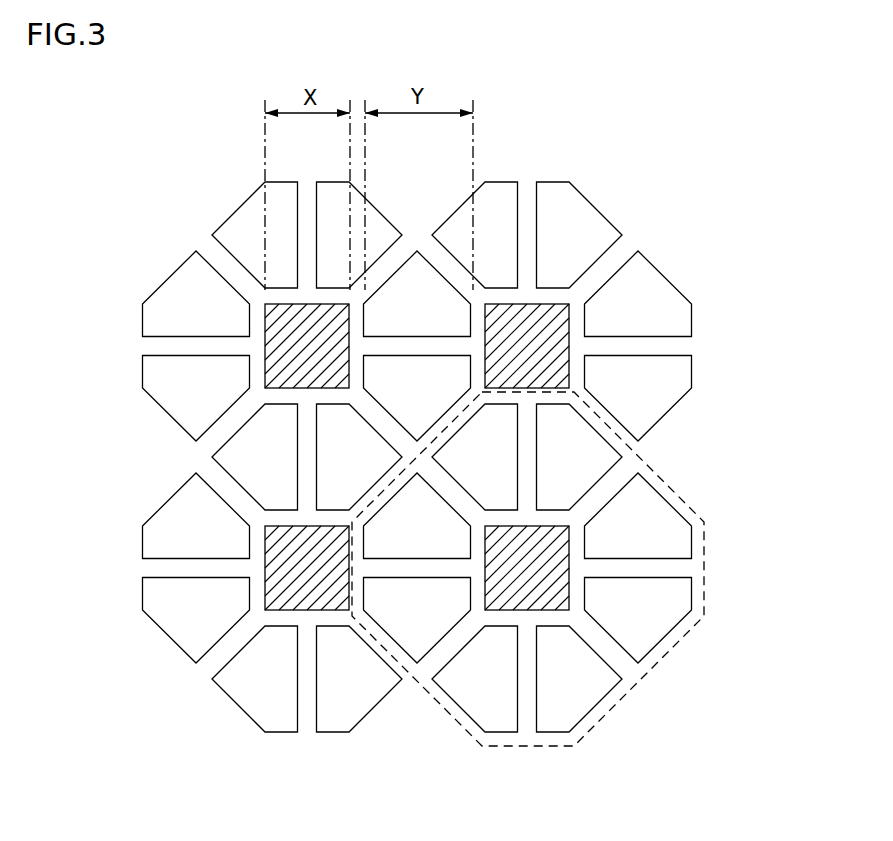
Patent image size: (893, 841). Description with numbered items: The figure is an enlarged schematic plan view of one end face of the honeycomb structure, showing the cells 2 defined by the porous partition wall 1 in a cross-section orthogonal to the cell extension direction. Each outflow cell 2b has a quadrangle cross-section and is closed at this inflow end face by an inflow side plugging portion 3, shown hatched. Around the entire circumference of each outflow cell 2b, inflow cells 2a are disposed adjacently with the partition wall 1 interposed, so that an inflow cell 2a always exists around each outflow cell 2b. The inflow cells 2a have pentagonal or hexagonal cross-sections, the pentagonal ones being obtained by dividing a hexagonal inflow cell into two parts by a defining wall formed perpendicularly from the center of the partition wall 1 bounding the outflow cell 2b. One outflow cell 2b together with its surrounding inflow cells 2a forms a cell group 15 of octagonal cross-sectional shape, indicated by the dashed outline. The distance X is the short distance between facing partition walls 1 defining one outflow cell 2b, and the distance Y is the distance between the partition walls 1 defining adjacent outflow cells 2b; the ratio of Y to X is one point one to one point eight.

The partition wall 1 is at (673, 567).
The cell 2 is at (433, 457).
The inflow cell 2a is at (190, 412).
The outflow cell 2b is at (548, 611).
The inflow side plugging portion 3 is at (557, 338).
The cell group 15 is at (498, 752).